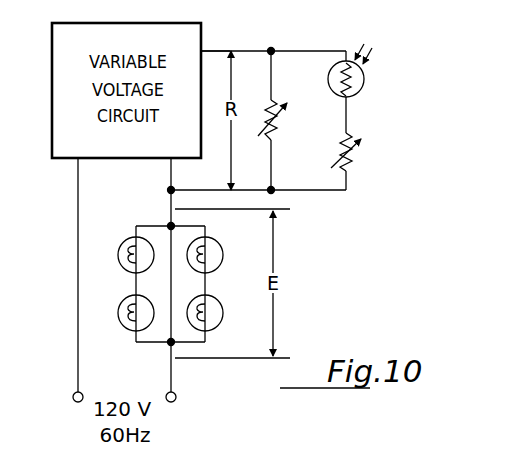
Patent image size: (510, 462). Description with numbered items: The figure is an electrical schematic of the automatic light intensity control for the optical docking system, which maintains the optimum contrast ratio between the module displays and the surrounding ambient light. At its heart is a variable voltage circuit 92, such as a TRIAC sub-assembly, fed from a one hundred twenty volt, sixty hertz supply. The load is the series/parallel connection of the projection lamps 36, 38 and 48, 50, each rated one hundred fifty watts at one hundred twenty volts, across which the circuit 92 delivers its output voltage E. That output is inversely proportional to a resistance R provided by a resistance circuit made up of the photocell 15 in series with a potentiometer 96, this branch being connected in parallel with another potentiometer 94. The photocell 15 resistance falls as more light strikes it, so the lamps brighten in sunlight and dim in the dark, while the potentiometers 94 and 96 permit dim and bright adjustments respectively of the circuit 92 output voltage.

The variable voltage circuit 92 is at (196, 43).
The potentiometer 94 is at (283, 123).
The photocell 15 is at (365, 79).
The potentiometer 96 is at (353, 156).
The projection lamp 36 is at (121, 249).
The projection lamp 48 is at (219, 249).
The projection lamp 38 is at (121, 320).
The projection lamp 50 is at (219, 320).